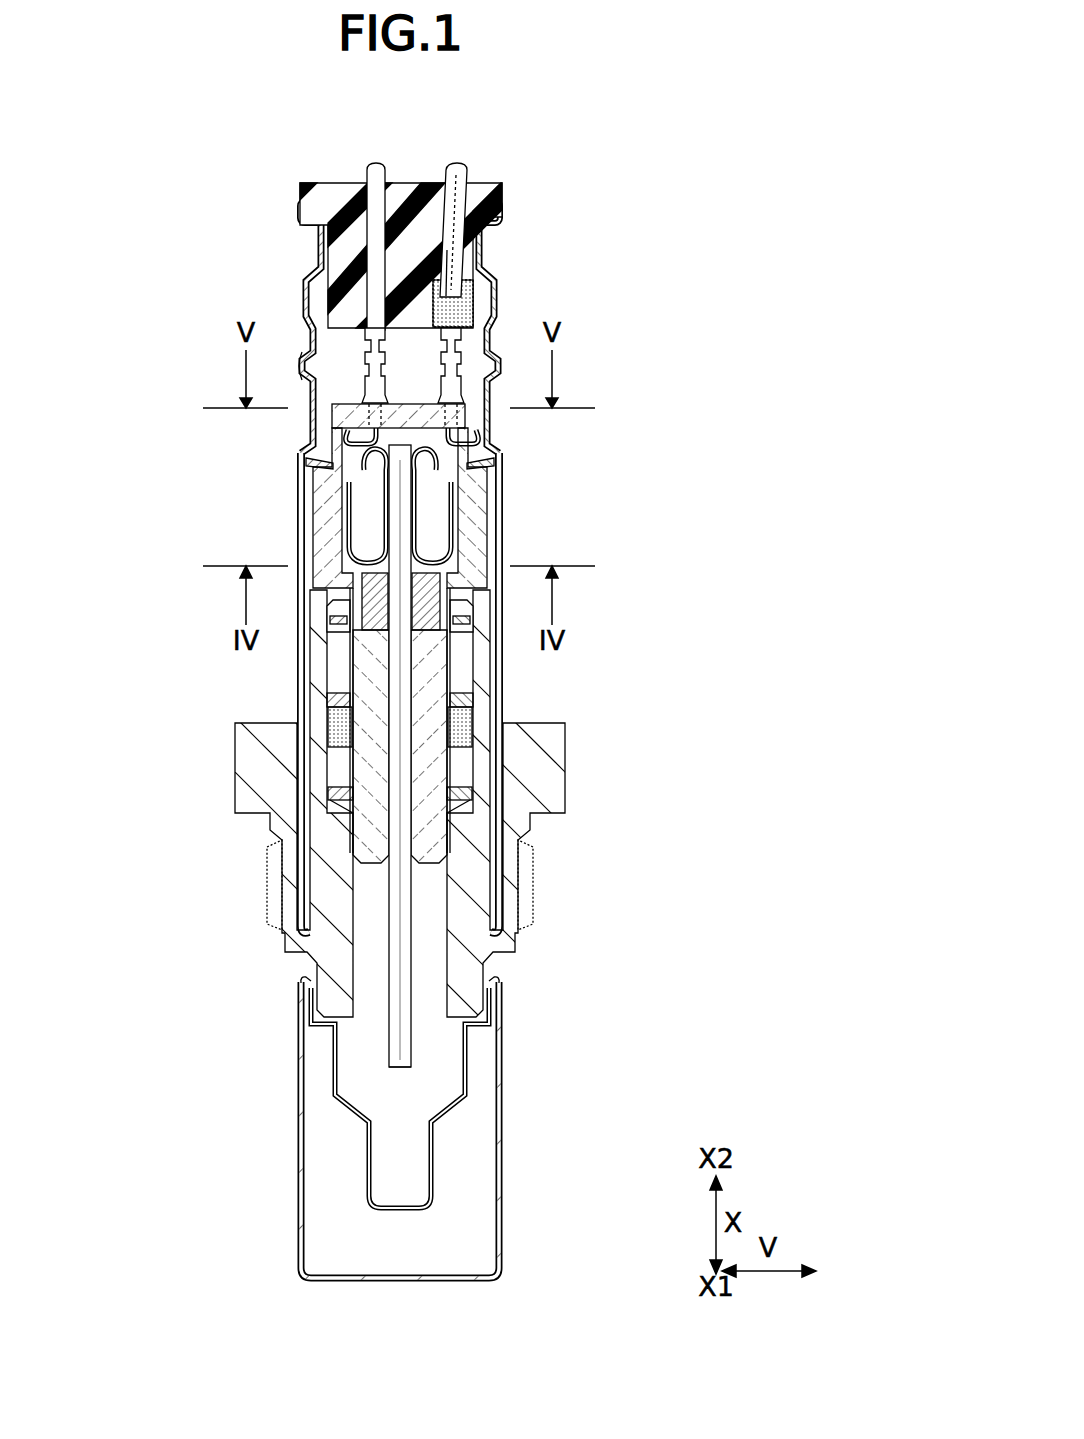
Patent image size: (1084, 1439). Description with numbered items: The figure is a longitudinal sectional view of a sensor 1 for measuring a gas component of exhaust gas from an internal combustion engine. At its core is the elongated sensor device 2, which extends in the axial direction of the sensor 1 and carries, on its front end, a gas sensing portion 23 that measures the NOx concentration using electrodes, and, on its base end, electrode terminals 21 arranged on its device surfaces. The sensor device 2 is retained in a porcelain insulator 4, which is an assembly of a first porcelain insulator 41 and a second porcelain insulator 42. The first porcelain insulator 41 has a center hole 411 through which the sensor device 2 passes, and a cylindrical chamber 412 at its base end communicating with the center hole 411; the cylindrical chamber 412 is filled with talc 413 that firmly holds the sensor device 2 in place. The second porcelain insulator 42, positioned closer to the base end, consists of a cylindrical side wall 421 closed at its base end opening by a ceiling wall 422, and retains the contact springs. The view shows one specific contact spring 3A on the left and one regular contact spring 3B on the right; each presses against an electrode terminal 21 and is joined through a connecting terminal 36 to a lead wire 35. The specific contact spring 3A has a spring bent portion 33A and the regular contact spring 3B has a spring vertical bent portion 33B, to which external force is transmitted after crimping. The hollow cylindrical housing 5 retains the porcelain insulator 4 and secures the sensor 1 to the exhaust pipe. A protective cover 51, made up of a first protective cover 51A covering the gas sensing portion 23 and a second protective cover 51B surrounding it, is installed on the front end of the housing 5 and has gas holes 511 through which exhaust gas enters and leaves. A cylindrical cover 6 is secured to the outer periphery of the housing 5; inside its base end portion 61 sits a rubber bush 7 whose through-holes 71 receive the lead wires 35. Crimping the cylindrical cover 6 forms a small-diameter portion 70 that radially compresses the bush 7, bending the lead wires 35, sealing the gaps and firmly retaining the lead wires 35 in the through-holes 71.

The sensor 1 is at (514, 172).
The sensor device 2 is at (402, 947).
The electrode terminals 21 is at (375, 458).
The gas sensing portion 23 is at (405, 1062).
The specific contact spring 3A is at (335, 432).
The regular contact spring 3B is at (462, 440).
The spring bent portion 33A is at (253, 453).
The spring vertical bent portion 33B is at (539, 447).
The lead wire 35 is at (360, 248).
The connecting terminal 36 is at (305, 360).
The porcelain insulator 4 is at (503, 642).
The first porcelain insulator 41 is at (478, 703).
The center hole 411 is at (395, 843).
The cylindrical chamber 412 is at (372, 622).
The talc 413 is at (443, 573).
The second porcelain insulator 42 is at (547, 490).
The cylindrical side wall 421 is at (480, 493).
The ceiling wall 422 is at (470, 410).
The housing 5 is at (475, 800).
The protective cover 51 is at (430, 1127).
The first protective cover 51A is at (468, 1086).
The second protective cover 51B is at (498, 1133).
The gas holes 511 is at (300, 1230).
The cylindrical cover 6 is at (488, 310).
The base end portion 61 is at (493, 203).
The bush 7 is at (455, 243).
The small-diameter portion 70 is at (456, 260).
The through-holes 71 is at (450, 168).